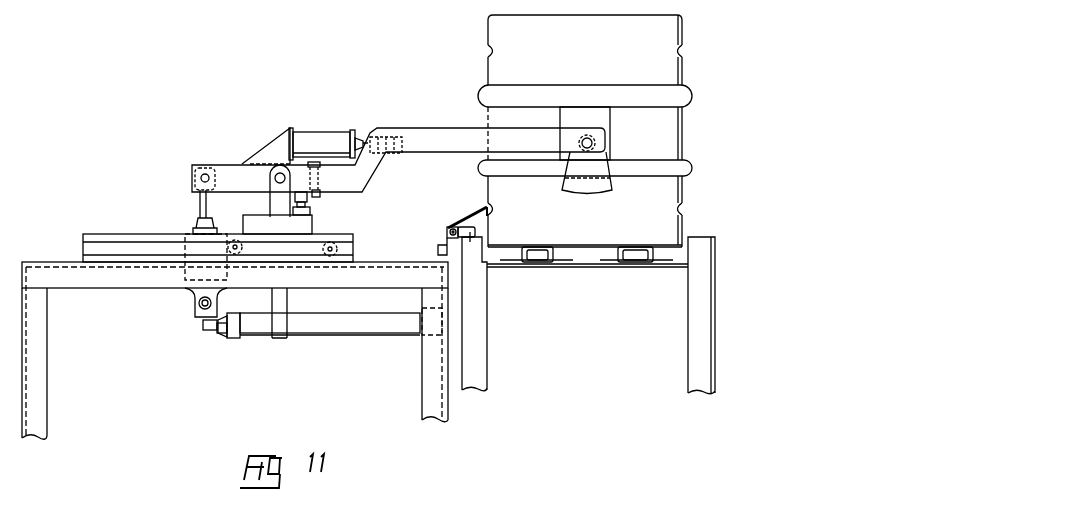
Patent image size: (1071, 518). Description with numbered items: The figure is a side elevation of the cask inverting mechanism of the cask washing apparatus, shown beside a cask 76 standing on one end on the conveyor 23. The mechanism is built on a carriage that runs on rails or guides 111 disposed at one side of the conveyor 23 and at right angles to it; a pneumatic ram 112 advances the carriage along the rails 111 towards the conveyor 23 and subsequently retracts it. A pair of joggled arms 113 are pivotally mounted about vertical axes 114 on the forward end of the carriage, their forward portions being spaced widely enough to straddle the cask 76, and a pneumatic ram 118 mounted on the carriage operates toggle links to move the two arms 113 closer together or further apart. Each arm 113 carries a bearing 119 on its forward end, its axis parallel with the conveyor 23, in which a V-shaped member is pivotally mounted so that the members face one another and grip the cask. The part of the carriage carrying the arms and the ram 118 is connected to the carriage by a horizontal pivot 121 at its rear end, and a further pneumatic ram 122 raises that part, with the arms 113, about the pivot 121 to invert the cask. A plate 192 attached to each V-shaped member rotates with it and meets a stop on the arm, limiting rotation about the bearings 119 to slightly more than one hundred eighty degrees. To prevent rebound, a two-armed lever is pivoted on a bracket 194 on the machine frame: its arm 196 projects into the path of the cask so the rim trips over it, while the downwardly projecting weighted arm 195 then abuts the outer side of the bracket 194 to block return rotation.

The cask 76 is at (678, 73).
The rails or guides 111 is at (107, 234).
The pneumatic ram 112 is at (338, 333).
The arms 113 is at (438, 128).
The vertical axes 114 is at (315, 162).
The pneumatic ram 118 is at (313, 138).
The bearing 119 is at (594, 143).
The horizontal pivot 121 is at (277, 173).
The pneumatic ram 122 is at (185, 250).
The plate 192 is at (613, 188).
The bracket 194 is at (470, 232).
The weighted arm 195 is at (439, 245).
The arm 196 is at (458, 222).
The conveyor 23 is at (635, 262).